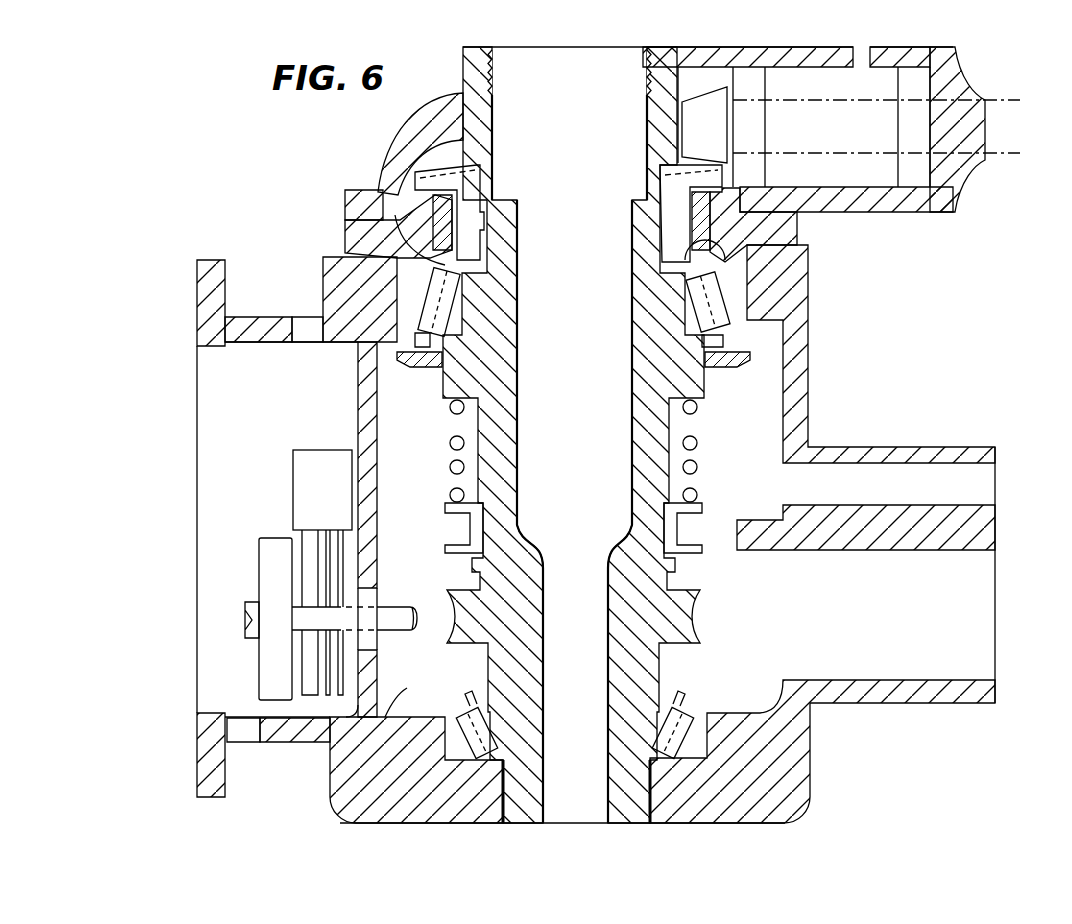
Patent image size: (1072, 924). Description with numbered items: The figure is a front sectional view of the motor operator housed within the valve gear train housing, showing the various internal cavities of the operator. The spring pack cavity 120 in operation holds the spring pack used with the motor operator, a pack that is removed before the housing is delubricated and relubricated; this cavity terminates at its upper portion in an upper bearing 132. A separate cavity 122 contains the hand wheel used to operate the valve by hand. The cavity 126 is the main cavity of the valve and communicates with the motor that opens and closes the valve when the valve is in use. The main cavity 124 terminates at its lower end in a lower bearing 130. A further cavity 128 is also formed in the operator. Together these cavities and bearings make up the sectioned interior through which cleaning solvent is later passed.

The spring pack cavity 120 is at (963, 618).
The cavity 122 is at (868, 85).
The main cavity 124 is at (330, 777).
The main cavity 126 is at (398, 455).
The cavity 128 is at (407, 197).
The lower bearing 130 is at (498, 740).
The upper bearing 132 is at (730, 300).